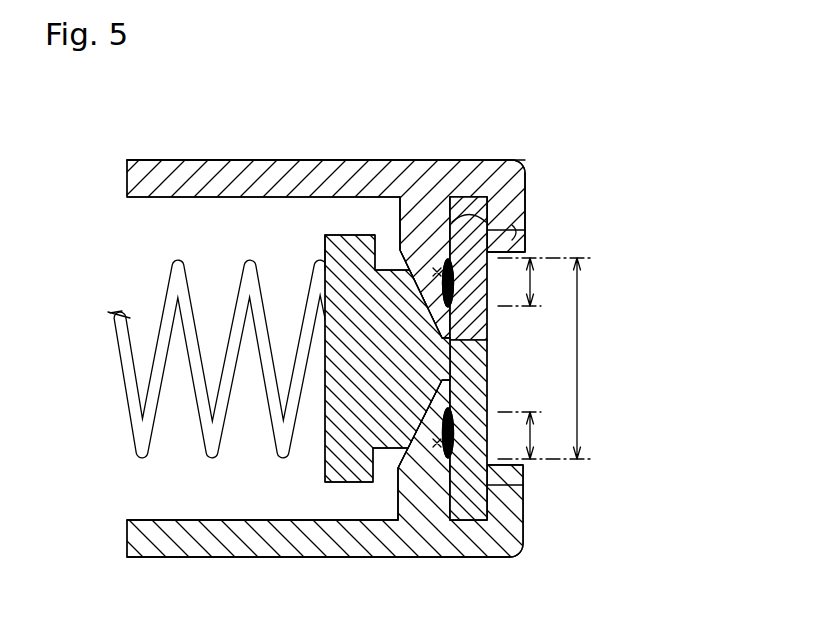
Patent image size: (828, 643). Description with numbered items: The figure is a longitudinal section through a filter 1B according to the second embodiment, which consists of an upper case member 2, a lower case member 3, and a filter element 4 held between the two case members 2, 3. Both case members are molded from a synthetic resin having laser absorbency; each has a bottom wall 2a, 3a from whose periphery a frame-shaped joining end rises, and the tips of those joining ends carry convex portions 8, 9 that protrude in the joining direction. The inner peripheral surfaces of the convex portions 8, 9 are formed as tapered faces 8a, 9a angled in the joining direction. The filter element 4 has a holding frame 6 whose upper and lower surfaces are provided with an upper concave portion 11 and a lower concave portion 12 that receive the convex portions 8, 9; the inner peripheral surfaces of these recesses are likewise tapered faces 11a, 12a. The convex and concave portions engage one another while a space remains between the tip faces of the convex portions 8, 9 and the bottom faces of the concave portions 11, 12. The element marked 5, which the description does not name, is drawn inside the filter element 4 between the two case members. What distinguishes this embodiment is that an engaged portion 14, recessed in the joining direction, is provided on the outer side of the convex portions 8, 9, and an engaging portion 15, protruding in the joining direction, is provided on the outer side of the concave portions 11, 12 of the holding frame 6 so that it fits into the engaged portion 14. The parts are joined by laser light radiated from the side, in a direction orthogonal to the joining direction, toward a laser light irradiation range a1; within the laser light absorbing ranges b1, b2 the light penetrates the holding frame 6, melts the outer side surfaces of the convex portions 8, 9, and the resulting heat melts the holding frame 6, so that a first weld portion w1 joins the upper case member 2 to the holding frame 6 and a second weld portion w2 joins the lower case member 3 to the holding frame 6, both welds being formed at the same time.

The filter 1B is at (604, 159).
The upper case member 2 is at (150, 148).
The bottom wall 2a is at (205, 170).
The lower case member 3 is at (182, 567).
The bottom wall 3a is at (248, 545).
The filter element 4 is at (333, 224).
The spring 5 is at (195, 278).
The holding frame 6 is at (325, 247).
The convex portion 8 is at (455, 225).
The tapered face 8a is at (420, 295).
The convex portion 9 is at (455, 470).
The tapered face 9a is at (437, 425).
The upper concave portion 11 is at (440, 262).
The tapered face 11a is at (425, 180).
The lower concave portion 12 is at (415, 522).
The tapered face 12a is at (410, 521).
The engaged portion 14 is at (492, 210).
The engaging portion 15 is at (512, 225).
The first weld portion w1 is at (517, 235).
The second weld portion w2 is at (487, 470).
The laser light absorbing range b1 is at (538, 283).
The laser light absorbing range b2 is at (537, 436).
The laser light irradiation range a1 is at (578, 343).